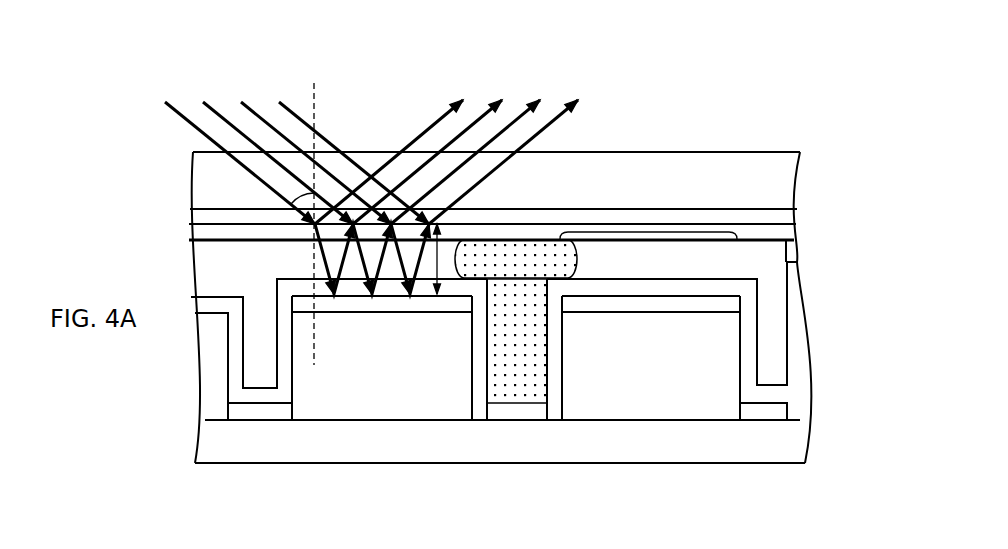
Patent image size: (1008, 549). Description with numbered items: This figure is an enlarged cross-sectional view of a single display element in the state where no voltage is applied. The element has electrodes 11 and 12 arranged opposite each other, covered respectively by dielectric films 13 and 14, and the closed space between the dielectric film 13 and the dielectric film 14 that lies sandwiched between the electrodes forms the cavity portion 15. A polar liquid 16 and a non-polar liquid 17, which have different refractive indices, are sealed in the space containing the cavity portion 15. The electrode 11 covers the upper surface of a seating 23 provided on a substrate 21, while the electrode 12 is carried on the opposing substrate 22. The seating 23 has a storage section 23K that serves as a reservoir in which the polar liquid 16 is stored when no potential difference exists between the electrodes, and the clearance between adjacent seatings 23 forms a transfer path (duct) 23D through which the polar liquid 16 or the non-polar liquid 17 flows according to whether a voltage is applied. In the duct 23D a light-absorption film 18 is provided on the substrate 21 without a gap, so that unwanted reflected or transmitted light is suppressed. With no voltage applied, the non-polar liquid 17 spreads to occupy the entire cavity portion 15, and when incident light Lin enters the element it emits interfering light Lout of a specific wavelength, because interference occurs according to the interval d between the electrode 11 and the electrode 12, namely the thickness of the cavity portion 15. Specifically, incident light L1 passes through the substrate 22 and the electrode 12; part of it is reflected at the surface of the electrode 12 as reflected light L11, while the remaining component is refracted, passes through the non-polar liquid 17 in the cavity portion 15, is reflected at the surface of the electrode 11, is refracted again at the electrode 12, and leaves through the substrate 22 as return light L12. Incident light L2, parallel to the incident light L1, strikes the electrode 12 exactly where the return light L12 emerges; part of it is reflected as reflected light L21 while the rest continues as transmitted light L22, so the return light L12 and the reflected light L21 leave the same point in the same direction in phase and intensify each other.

The electrode 11 is at (697, 302).
The electrode 12 is at (790, 210).
The dielectric film 13 is at (543, 412).
The dielectric film 14 is at (790, 231).
The cavity portion 15 is at (650, 232).
The polar liquid 16 is at (517, 247).
The non-polar liquid 17 is at (775, 342).
The light-absorption film 18 is at (258, 413).
The substrate 21 is at (413, 440).
The substrate 22 is at (790, 178).
The seating 23 is at (631, 412).
The transfer path (duct) 23D is at (763, 318).
The storage section 23K is at (552, 368).
The incident light L1 is at (182, 110).
The incident light L2 is at (222, 110).
The reflected light L11 is at (412, 136).
The return light L12 is at (325, 262).
The reflected light L21 is at (475, 118).
The transmitted light L22 is at (350, 270).
The incident light Lin is at (292, 52).
The interfering light Lout is at (583, 48).
The interval d is at (444, 259).